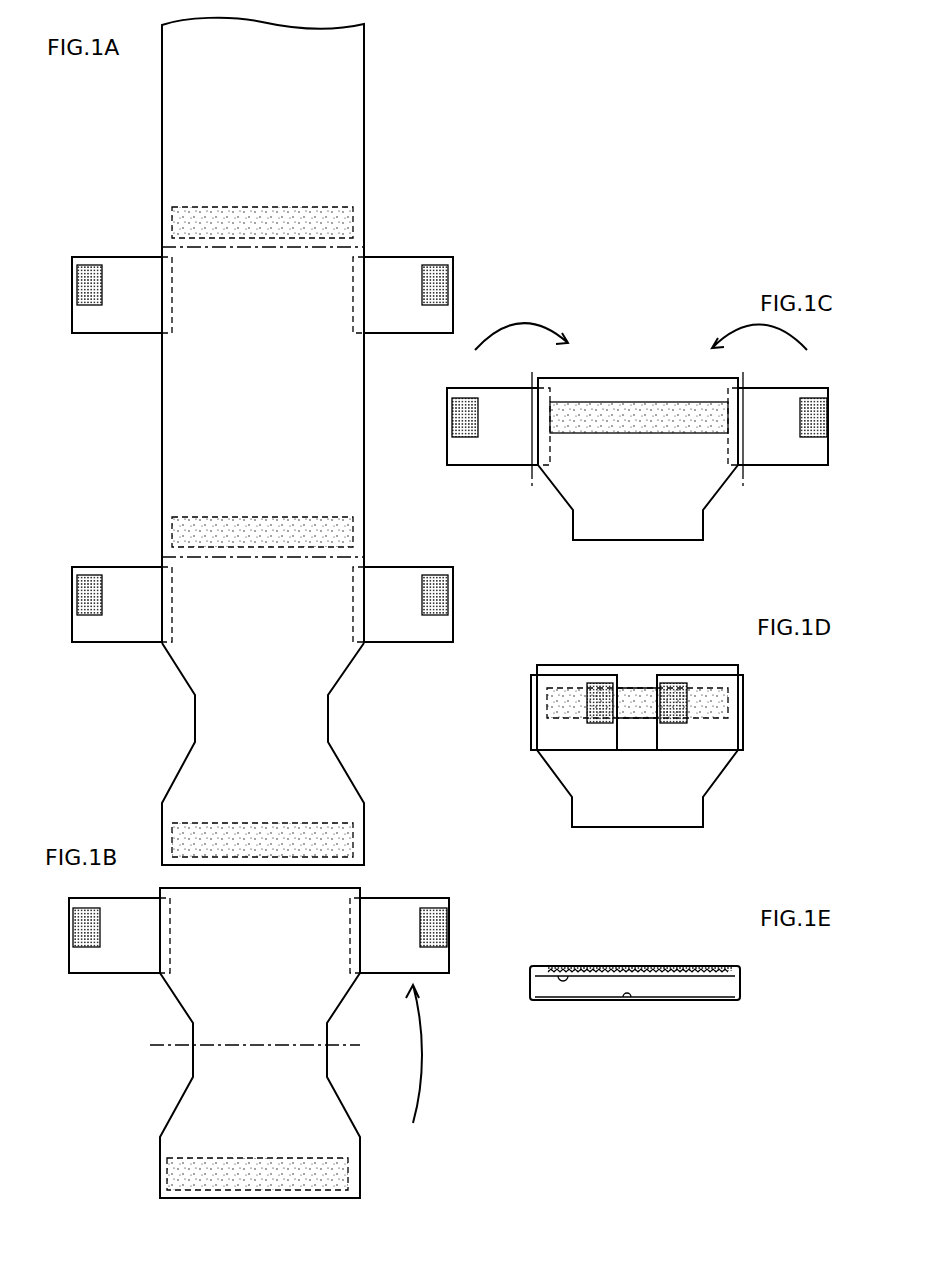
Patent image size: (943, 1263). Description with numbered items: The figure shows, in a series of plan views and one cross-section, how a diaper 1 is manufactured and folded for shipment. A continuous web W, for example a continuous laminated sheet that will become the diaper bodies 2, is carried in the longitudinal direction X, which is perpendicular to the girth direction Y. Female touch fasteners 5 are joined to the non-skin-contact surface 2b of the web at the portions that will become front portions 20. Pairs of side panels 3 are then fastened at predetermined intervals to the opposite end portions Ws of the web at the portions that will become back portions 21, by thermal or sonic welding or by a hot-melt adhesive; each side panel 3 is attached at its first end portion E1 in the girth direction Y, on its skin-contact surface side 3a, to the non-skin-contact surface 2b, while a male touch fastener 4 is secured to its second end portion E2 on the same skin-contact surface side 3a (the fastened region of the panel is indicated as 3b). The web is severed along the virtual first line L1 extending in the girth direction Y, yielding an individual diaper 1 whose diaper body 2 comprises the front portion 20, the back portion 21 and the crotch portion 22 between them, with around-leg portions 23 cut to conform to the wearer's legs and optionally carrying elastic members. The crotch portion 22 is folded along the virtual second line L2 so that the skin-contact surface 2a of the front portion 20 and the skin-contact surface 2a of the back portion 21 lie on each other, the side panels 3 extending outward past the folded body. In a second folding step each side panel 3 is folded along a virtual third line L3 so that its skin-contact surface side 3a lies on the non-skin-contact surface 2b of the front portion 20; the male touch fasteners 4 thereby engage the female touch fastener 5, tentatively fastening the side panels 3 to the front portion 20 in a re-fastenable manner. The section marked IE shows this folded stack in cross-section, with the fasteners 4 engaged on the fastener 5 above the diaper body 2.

In FIG. 1B, the diaper 1 is at (90, 1013).
In FIG. 1C, the diaper 1 is at (623, 315).
In FIG. 1D, the diaper 1 is at (639, 625).
In FIG. 1E, the diaper 1 is at (669, 937).
In FIG. 1A, the diaper body 2 is at (300, 728).
In FIG. 1B, the diaper body 2 is at (320, 1106).
In FIG. 1C, the diaper body 2 is at (676, 528).
In FIG. 1D, the diaper body 2 is at (660, 818).
In FIG. 1E, the diaper body 2 is at (650, 997).
In FIG. 1A, the skin-contact surface 2a is at (196, 402).
In FIG. 1B, the skin-contact surface 2a is at (210, 1063).
In FIG. 1E, the skin-contact surface 2a is at (625, 997).
In FIG. 1A, the non-skin-contact surface 2b is at (185, 443).
In FIG. 1B, the non-skin-contact surface 2b is at (205, 1100).
In FIG. 1C, the non-skin-contact surface 2b is at (641, 508).
In FIG. 1D, the non-skin-contact surface 2b is at (677, 785).
In FIG. 1E, the non-skin-contact surface 2b is at (620, 972).
In FIG. 1A, the side panel 3 is at (131, 268).
In FIG. 1B, the side panel 3 is at (114, 922).
In FIG. 1C, the side panel 3 is at (508, 406).
In FIG. 1D, the side panel 3 is at (545, 733).
In FIG. 1E, the side panel 3 is at (530, 976).
In FIG. 1A, the skin-contact surface side 3a is at (145, 281).
In FIG. 1B, the skin-contact surface side 3a is at (145, 920).
In FIG. 1C, the skin-contact surface side 3a is at (458, 455).
In FIG. 1D, the skin-contact surface side 3a is at (550, 680).
In FIG. 1E, the skin-contact surface side 3a is at (538, 966).
In FIG. 1A, the tape fixed portion 3b is at (147, 296).
In FIG. 1A, the male touch fastener 4 is at (90, 272).
In FIG. 1B, the male touch fastener 4 is at (88, 921).
In FIG. 1C, the male touch fastener 4 is at (468, 400).
In FIG. 1D, the male touch fastener 4 is at (592, 680).
In FIG. 1E, the male touch fastener 4 is at (597, 968).
In FIG. 1A, the female touch fastener 5 is at (250, 222).
In FIG. 1B, the female touch fastener 5 is at (220, 1170).
In FIG. 1C, the female touch fastener 5 is at (653, 406).
In FIG. 1D, the female touch fastener 5 is at (640, 700).
In FIG. 1E, the female touch fastener 5 is at (640, 969).
In FIG. 1A, the front portion 20 is at (316, 803).
In FIG. 1B, the front portion 20 is at (318, 1143).
In FIG. 1C, the front portion 20 is at (600, 389).
In FIG. 1D, the front portion 20 is at (598, 676).
In FIG. 1E, the front portion 20 is at (560, 967).
In FIG. 1A, the back portion 21 is at (222, 580).
In FIG. 1B, the back portion 21 is at (232, 943).
In FIG. 1E, the back portion 21 is at (595, 1000).
In FIG. 1A, the crotch portion 22 is at (259, 716).
In FIG. 1B, the crotch portion 22 is at (240, 1065).
In FIG. 1C, the crotch portion 22 is at (605, 526).
In FIG. 1D, the crotch portion 22 is at (610, 818).
In FIG. 1A, the around-leg portion 23 is at (190, 693).
In FIG. 1B, the around-leg portion 23 is at (190, 1010).
In FIG. 1C, the around-leg portion 23 is at (556, 501).
In FIG. 1D, the around-leg portion 23 is at (556, 782).
In FIG. 1A, the continuous web W is at (343, 50).
In FIG. 1A, the opposite end portions Ws is at (175, 72).
In FIG. 1A, the longitudinal direction X is at (113, 108).
In FIG. 1B, the longitudinal direction X is at (110, 1040).
In FIG. 1B, the girth direction Y is at (126, 1161).
In FIG. 1A, the first end portion E1 is at (172, 322).
In FIG. 1B, the first end portion E1 is at (166, 958).
In FIG. 1A, the second end portion E2 is at (82, 330).
In FIG. 1B, the second end portion E2 is at (90, 958).
In FIG. 1A, the virtual first line L1 is at (299, 560).
In FIG. 1B, the virtual second line L2 is at (267, 1043).
In FIG. 1C, the virtual third line L3 is at (528, 436).
In FIG. 1D, the section line IE- IE is at (518, 712).